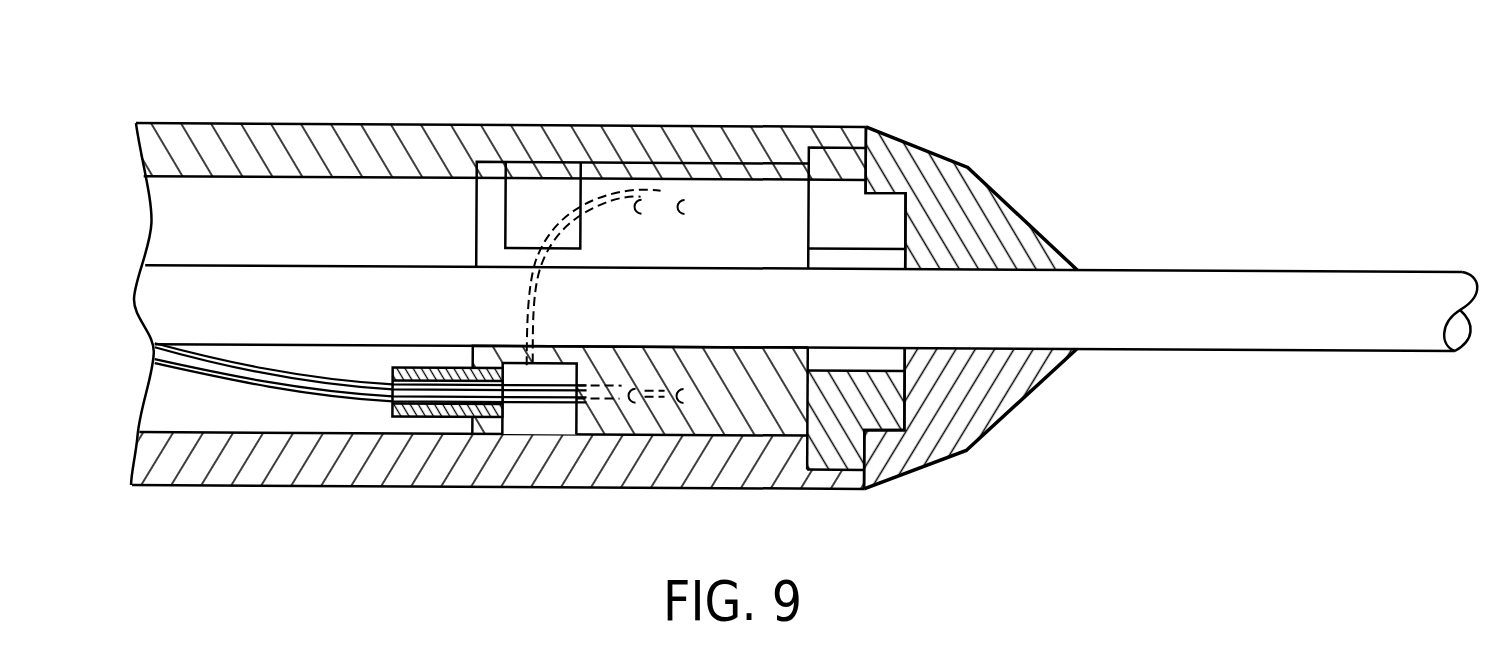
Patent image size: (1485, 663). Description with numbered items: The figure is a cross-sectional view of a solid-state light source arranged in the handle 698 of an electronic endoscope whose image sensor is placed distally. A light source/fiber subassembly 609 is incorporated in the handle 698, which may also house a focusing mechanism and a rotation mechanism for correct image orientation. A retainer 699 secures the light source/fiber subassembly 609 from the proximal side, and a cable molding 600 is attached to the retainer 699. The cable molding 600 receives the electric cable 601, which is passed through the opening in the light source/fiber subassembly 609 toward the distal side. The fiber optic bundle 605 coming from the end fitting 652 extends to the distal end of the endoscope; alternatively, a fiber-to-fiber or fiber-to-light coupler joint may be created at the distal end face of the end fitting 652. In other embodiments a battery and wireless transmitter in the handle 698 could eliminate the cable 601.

The handle 698 is at (323, 125).
The light source/fiber subassembly 609 is at (507, 190).
The retainer 699 is at (830, 143).
The cable molding 600 is at (1010, 205).
The electric cable 601 is at (1163, 270).
The fiber optic bundle 605 is at (232, 380).
The end fitting 652 is at (445, 405).